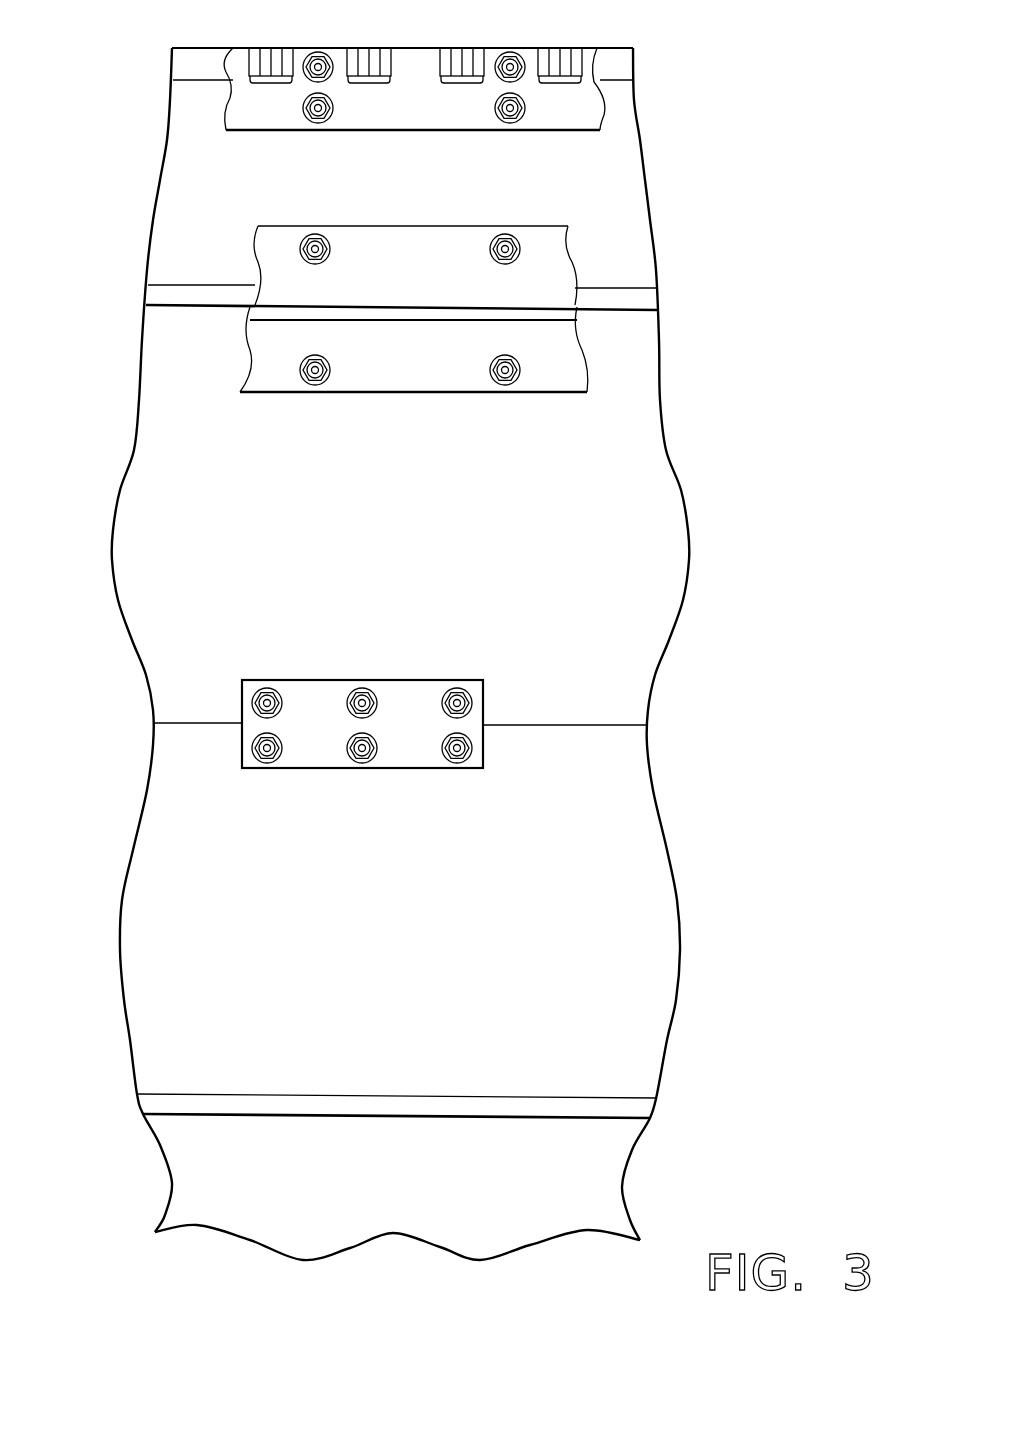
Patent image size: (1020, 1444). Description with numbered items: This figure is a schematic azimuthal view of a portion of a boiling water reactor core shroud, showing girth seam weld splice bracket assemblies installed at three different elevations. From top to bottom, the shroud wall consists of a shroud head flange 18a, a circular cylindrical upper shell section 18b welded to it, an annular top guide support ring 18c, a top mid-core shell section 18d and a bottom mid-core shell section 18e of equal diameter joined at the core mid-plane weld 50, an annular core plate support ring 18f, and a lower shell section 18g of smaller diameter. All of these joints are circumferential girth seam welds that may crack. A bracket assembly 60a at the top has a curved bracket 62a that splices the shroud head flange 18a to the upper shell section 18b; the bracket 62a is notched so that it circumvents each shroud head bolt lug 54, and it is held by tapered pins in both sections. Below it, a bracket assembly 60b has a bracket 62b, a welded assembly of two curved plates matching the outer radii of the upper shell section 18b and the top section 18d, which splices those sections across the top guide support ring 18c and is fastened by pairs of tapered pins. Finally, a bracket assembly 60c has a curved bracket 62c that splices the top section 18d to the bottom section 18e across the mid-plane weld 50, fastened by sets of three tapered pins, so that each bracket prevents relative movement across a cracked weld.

The shroud head flange 18a is at (192, 50).
The upper shell section 18b is at (195, 140).
The top guide support ring 18c is at (638, 300).
The top mid-core shell section 18d is at (662, 463).
The bottom mid-core shell section 18e is at (608, 842).
The core plate support ring 18f is at (638, 1110).
The lower shell section 18g is at (615, 1172).
The core mid-plane weld 50 is at (534, 723).
The shroud head bolt lug 54 is at (272, 55).
The bracket assembly 60a is at (423, 108).
The bracket assembly 60b is at (430, 353).
The bracket assembly 60c is at (270, 778).
The bracket 62a is at (377, 132).
The bracket 62b is at (360, 393).
The bracket 62c is at (362, 759).